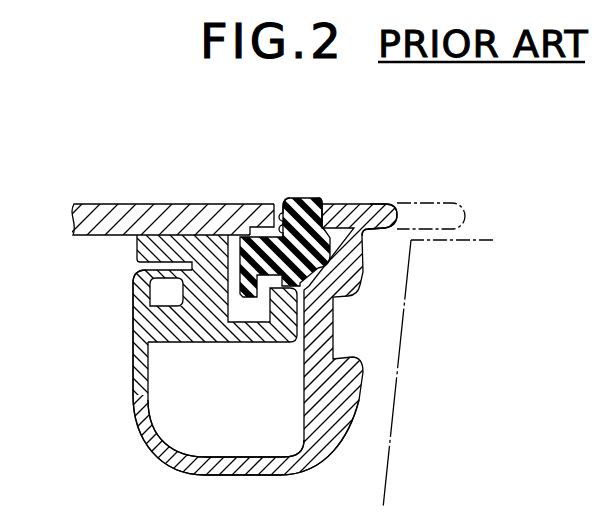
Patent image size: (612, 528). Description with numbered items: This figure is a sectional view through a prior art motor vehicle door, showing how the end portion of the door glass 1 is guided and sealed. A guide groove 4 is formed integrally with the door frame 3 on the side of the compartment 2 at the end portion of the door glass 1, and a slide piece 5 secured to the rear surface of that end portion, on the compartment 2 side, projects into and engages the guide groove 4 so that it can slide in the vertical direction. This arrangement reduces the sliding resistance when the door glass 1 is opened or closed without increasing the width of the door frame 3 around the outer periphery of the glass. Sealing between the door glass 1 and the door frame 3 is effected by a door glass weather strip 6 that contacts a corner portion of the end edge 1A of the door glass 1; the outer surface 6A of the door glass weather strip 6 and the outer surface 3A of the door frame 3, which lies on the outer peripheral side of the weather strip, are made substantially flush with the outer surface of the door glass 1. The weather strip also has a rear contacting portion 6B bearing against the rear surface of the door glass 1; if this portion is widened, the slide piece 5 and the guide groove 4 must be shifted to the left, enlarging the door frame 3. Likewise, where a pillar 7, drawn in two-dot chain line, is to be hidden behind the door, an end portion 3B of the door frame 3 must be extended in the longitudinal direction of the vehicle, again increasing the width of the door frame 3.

The door glass 1 is at (107, 204).
The end edge 1A is at (264, 213).
The compartment 2 is at (95, 397).
The door frame 3 is at (328, 447).
The outer surface 3A is at (372, 204).
The end portion 3B is at (385, 229).
The guide groove 4 is at (240, 440).
The slide piece 5 is at (190, 343).
The door glass weather strip 6 is at (312, 203).
The outer surface 6A is at (285, 202).
The rear contacting portion 6B is at (262, 215).
The pillar 7 is at (480, 229).